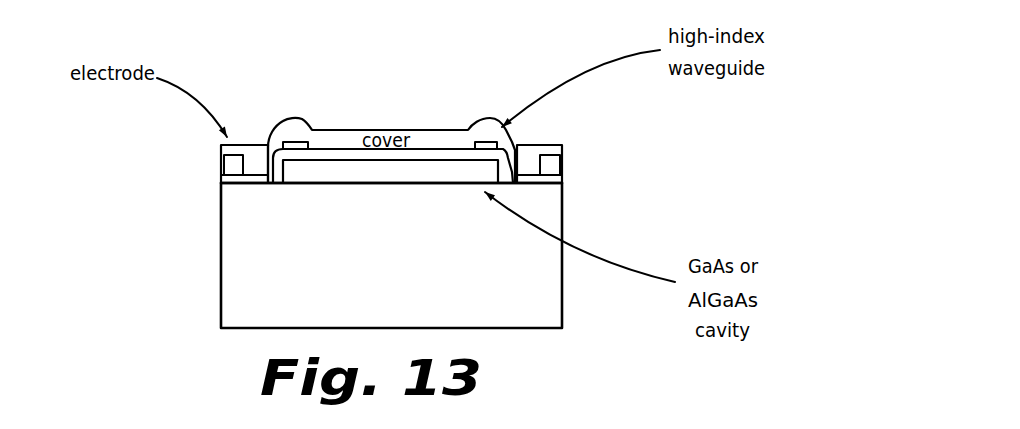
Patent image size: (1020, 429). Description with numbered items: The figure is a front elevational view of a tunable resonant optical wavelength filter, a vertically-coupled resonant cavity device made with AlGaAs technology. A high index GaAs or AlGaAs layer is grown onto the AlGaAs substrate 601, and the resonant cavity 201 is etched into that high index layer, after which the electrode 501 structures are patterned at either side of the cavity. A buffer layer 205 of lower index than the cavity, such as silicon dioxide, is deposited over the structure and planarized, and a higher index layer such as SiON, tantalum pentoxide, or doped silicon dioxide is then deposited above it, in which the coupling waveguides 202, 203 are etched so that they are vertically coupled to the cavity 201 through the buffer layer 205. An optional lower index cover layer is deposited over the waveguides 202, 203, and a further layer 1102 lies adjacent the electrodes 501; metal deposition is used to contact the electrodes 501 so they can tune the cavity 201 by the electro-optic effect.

The electrode 501 is at (252, 158).
The coupling waveguide 202 is at (303, 140).
The resonant cavity 201 is at (428, 168).
The coupling waveguide 203 is at (483, 142).
The buffer layer 205 is at (217, 178).
The cladding layer 1102 is at (560, 177).
The AlGaAs substrate 601 is at (540, 295).